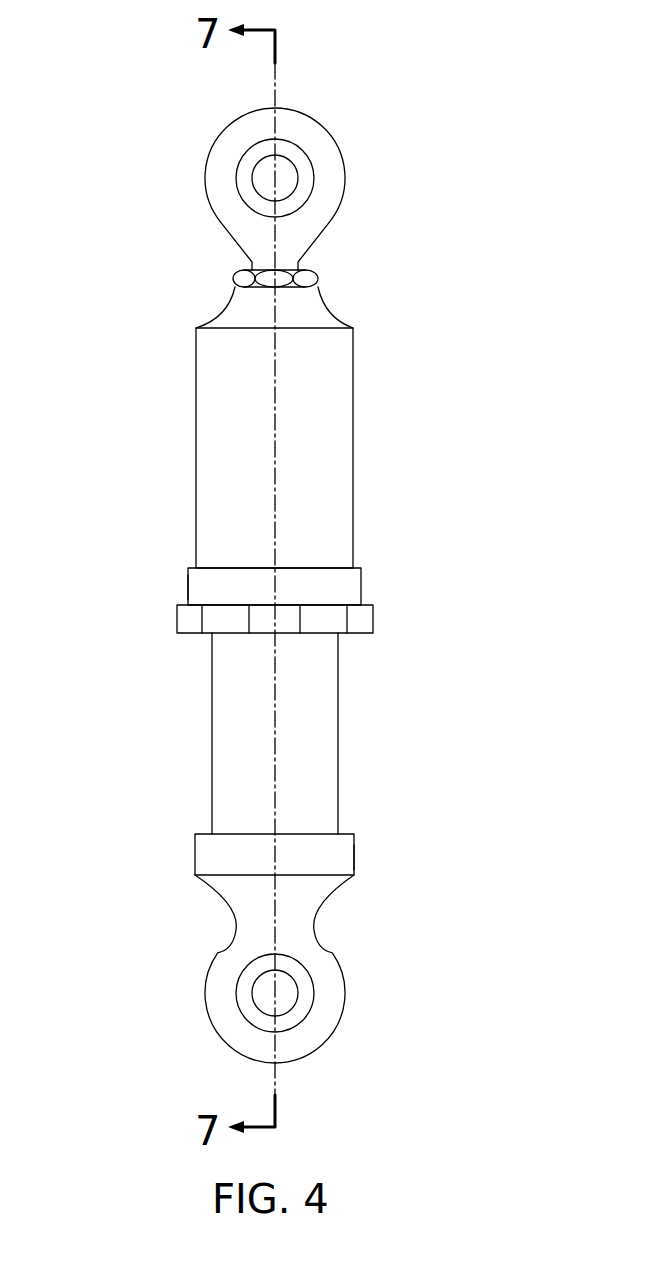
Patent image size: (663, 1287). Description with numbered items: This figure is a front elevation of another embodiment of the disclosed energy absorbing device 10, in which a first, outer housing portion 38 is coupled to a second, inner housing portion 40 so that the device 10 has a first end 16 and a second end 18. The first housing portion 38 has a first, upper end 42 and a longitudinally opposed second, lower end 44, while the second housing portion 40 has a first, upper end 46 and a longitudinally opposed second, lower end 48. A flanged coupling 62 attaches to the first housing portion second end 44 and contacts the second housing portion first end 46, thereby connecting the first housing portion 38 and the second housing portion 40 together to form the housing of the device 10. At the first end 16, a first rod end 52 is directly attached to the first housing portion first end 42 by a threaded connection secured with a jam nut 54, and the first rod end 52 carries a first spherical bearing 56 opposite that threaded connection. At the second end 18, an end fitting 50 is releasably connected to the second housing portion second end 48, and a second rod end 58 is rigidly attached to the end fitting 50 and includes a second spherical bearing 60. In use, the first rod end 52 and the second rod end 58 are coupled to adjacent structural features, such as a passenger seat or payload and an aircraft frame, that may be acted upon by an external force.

The energy absorbing device 10 is at (439, 90).
The first end 16 is at (230, 228).
The second end 18 is at (224, 957).
The first housing portion 38 is at (345, 470).
The second housing portion 40 is at (212, 733).
The first housing portion first end 42 is at (343, 323).
The first housing portion second end 44 is at (353, 567).
The second housing portion first end 46 is at (345, 634).
The second housing portion second end 48 is at (338, 833).
The end fitting 50 is at (350, 860).
The first rod end 52 is at (345, 178).
The jam nut 54 is at (318, 277).
The first spherical bearing 56 is at (242, 178).
The second rod end 58 is at (328, 962).
The second spherical bearing 60 is at (301, 1007).
The flanged coupling 62 is at (188, 588).